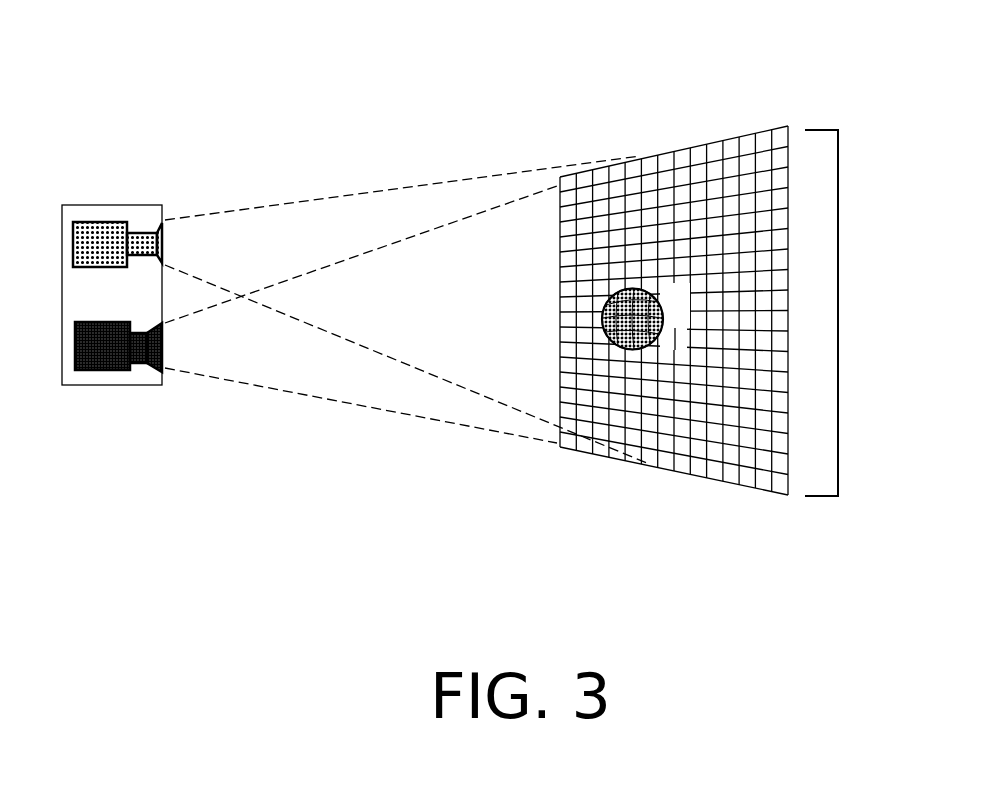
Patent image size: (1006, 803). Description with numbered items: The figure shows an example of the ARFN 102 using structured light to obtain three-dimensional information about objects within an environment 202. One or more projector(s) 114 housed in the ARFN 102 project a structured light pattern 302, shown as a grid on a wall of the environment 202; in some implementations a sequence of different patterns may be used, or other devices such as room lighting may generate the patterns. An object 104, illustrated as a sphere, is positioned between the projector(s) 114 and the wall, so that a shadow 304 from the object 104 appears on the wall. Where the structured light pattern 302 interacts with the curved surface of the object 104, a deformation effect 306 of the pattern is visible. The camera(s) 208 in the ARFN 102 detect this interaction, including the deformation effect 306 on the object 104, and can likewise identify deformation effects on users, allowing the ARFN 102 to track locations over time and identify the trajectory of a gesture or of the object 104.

The ARFN 102 is at (93, 385).
The object 104 is at (627, 287).
The projector(s) 114 is at (100, 243).
The environment 202 is at (776, 311).
The camera(s) 208 is at (122, 372).
The structured light pattern 302 is at (562, 192).
The shadow 304 is at (683, 298).
The deformation effect 306 is at (613, 333).